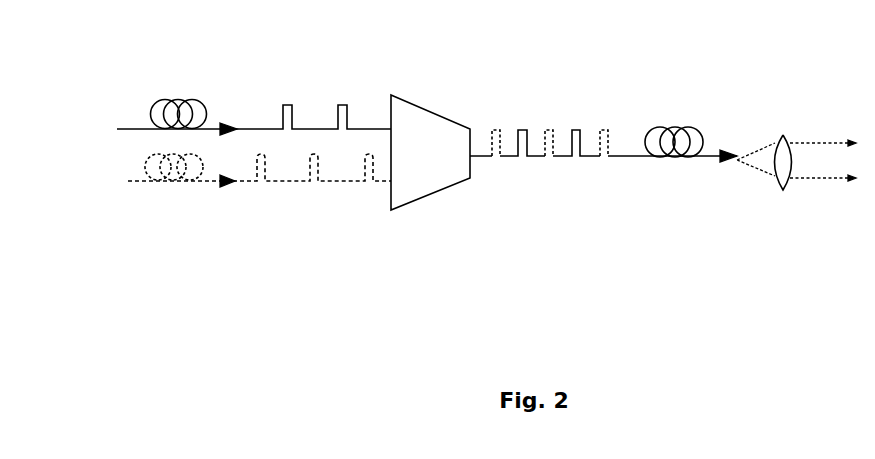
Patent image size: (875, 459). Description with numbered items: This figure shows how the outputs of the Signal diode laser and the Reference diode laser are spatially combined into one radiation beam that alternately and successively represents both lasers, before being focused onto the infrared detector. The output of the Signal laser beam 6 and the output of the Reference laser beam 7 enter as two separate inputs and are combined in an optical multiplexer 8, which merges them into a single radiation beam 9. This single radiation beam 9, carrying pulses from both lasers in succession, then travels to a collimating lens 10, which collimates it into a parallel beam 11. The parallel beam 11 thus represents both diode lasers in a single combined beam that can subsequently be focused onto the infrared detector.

The output of the Signal laser beam 6 is at (170, 98).
The output of the Reference laser beam 7 is at (173, 181).
The optical multiplexer 8 is at (435, 125).
The single radiation beam 9 is at (498, 172).
The collimating lens 10 is at (783, 132).
The parallel beam 11 is at (843, 163).